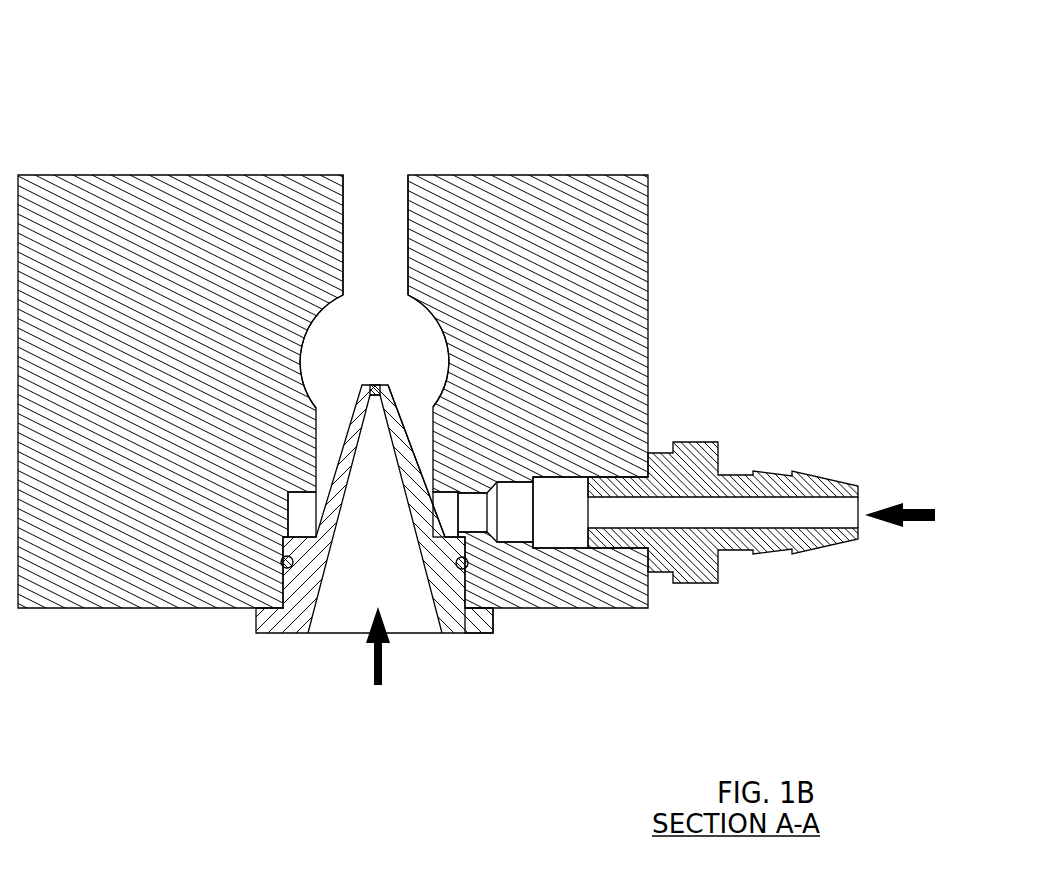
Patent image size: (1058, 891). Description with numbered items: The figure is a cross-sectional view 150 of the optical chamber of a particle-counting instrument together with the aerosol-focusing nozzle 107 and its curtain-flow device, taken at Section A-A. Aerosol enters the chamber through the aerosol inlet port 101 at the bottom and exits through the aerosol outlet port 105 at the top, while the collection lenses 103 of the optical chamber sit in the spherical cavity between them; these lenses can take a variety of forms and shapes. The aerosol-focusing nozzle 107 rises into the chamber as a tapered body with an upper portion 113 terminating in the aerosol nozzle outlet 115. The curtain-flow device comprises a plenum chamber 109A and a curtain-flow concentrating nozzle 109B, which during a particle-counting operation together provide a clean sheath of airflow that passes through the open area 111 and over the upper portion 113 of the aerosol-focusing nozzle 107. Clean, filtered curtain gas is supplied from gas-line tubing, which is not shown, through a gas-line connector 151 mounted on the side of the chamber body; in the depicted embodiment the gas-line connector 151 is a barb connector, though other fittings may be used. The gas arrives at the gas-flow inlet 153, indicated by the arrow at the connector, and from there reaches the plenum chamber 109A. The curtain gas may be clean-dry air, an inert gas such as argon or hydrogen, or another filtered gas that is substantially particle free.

The cross-sectional view 150 is at (611, 68).
The aerosol inlet port 101 is at (377, 665).
The collection lenses 103 is at (393, 336).
The aerosol outlet port 105 is at (370, 243).
The aerosol-focusing nozzle 107 is at (462, 618).
The plenum chamber 109A is at (300, 513).
The curtain-flow concentrating nozzle 109B is at (437, 480).
The open area 111 is at (427, 442).
The upper portion 113 is at (402, 418).
The aerosol nozzle outlet 115 is at (381, 373).
The gas-line connector 151 is at (773, 475).
The gas-flow inlet 153 is at (925, 523).